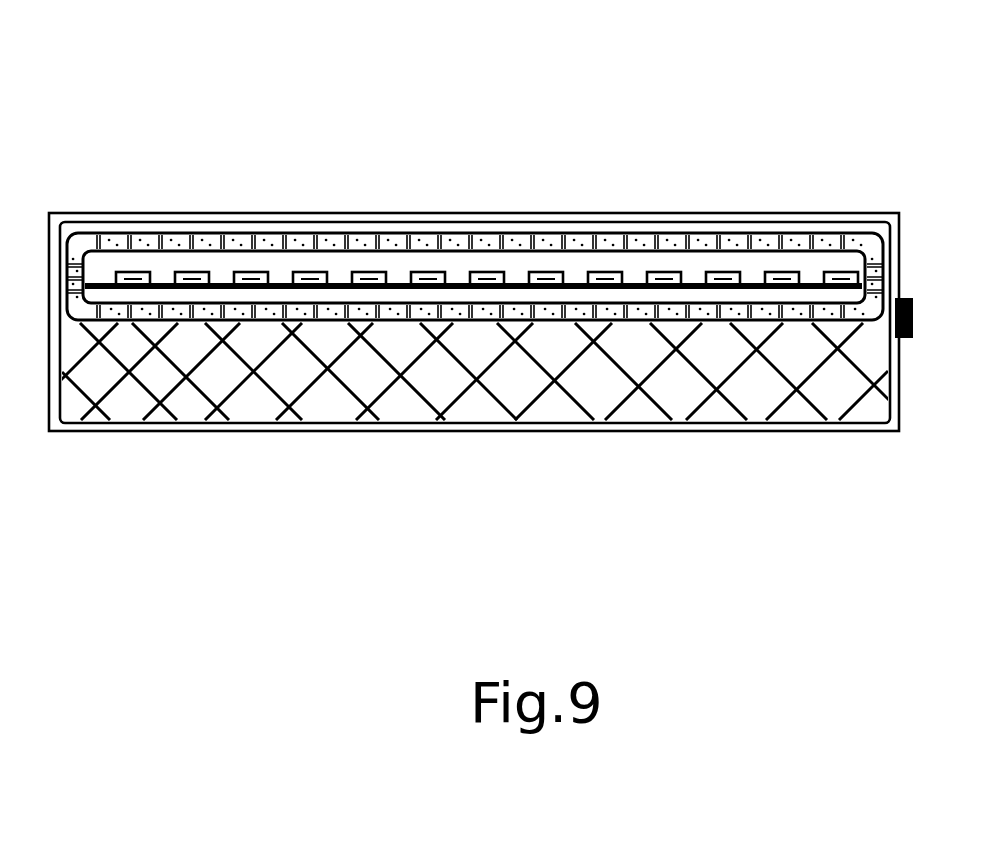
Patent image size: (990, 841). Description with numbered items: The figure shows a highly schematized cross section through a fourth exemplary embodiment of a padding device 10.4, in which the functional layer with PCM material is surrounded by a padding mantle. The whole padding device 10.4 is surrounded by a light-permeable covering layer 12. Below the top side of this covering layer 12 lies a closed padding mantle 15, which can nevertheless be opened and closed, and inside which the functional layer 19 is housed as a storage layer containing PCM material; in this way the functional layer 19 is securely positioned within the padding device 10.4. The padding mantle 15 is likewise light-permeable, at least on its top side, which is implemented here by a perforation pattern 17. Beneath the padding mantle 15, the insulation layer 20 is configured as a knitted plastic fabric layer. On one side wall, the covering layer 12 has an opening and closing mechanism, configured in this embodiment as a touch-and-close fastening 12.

The padding device 10.4 is at (845, 88).
The covering layer 12 is at (785, 213).
The padding mantle 15 is at (207, 226).
The perforation pattern 17 is at (402, 176).
The functional layer 19 is at (602, 260).
The insulation layer 20 is at (845, 405).